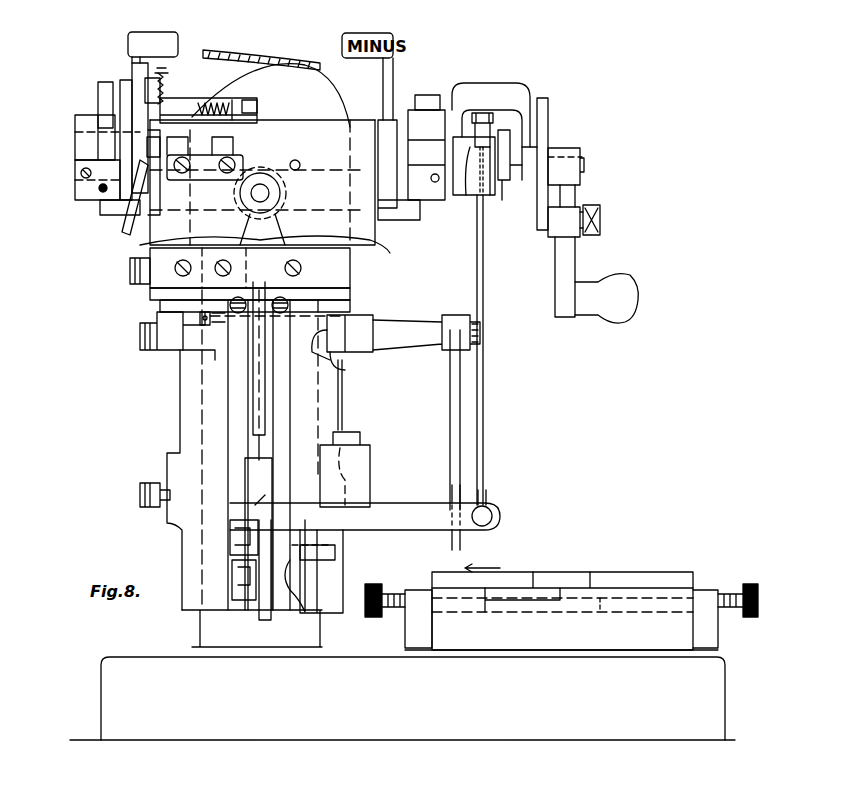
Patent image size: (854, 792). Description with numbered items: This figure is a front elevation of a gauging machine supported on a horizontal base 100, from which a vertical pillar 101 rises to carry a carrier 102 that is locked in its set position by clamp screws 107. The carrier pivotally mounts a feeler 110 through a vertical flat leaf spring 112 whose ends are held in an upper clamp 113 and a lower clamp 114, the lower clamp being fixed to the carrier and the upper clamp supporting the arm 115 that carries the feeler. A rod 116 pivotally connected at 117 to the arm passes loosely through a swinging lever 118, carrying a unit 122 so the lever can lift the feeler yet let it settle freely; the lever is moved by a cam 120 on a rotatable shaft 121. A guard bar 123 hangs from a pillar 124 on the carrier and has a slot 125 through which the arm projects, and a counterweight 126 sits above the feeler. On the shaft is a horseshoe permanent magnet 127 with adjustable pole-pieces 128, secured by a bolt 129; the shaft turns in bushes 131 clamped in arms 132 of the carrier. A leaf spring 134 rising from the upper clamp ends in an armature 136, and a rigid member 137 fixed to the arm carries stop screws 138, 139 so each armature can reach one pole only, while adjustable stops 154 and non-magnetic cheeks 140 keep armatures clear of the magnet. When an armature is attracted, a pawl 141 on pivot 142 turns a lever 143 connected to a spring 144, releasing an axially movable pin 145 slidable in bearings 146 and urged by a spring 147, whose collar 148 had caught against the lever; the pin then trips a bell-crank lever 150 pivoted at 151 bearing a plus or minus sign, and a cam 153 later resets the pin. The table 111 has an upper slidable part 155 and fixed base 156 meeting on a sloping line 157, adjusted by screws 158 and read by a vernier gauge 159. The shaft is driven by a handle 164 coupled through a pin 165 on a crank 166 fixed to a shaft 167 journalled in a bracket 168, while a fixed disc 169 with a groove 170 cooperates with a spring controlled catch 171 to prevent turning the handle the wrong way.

The horizontal base 100 is at (108, 680).
The vertical pillar 101 is at (235, 648).
The carrier 102 is at (176, 412).
The clamp screws 107 is at (130, 280).
The feeler 110 is at (343, 557).
The horizontal table 111 is at (529, 566).
The flat leaf spring 112 is at (262, 598).
The upper clamp 113 is at (232, 540).
The lower clamp 114 is at (250, 585).
The feeler arm 115 is at (430, 506).
The rod 116 is at (484, 452).
The pivot 117 is at (492, 514).
The swinging lever 118 is at (500, 130).
The cam 120 is at (472, 192).
The rotatable shaft 121 is at (75, 163).
The unit 122 is at (495, 118).
The bar 123 is at (457, 398).
The pillar 124 is at (405, 332).
The slot 125 is at (452, 532).
The counterweight 126 is at (360, 465).
The horseshoe permanent magnet 127 is at (272, 85).
The adjustable pole-pieces 128 is at (376, 255).
The bolt 129 is at (285, 128).
The bushes 131 is at (80, 190).
The arms 132 is at (72, 128).
The flat leaf spring 134 is at (262, 446).
The armature 136 is at (175, 302).
The rigid member 137 is at (280, 402).
The stop screw 138 is at (332, 327).
The stop screw 139 is at (225, 318).
The cheeks 140 is at (350, 292).
The pawl 141 is at (170, 246).
The pivot 142 is at (248, 100).
The lever 143 is at (160, 70).
The spring 144 is at (166, 90).
The axially movable pin 145 is at (232, 100).
The bearings 146 is at (218, 95).
The spring 147 is at (210, 182).
The collar 148 is at (150, 100).
The bell-crank lever 150 is at (150, 95).
The pivot 151 is at (98, 88).
The cam 153 is at (122, 232).
The adjustable stops 154 is at (175, 343).
The upper slidable part 155 is at (595, 580).
The fixed base 156 is at (568, 640).
The line 157 is at (609, 612).
The adjusting screws 158 is at (373, 620).
The vernier gauge 159 is at (552, 588).
The handle 164 is at (578, 262).
The pin 165 is at (550, 112).
The crank 166 is at (503, 195).
The shaft 167 is at (586, 165).
The bracket 168 is at (490, 86).
The fixed disc 169 is at (547, 230).
The groove 170 is at (560, 95).
The spring controlled catch 171 is at (565, 232).